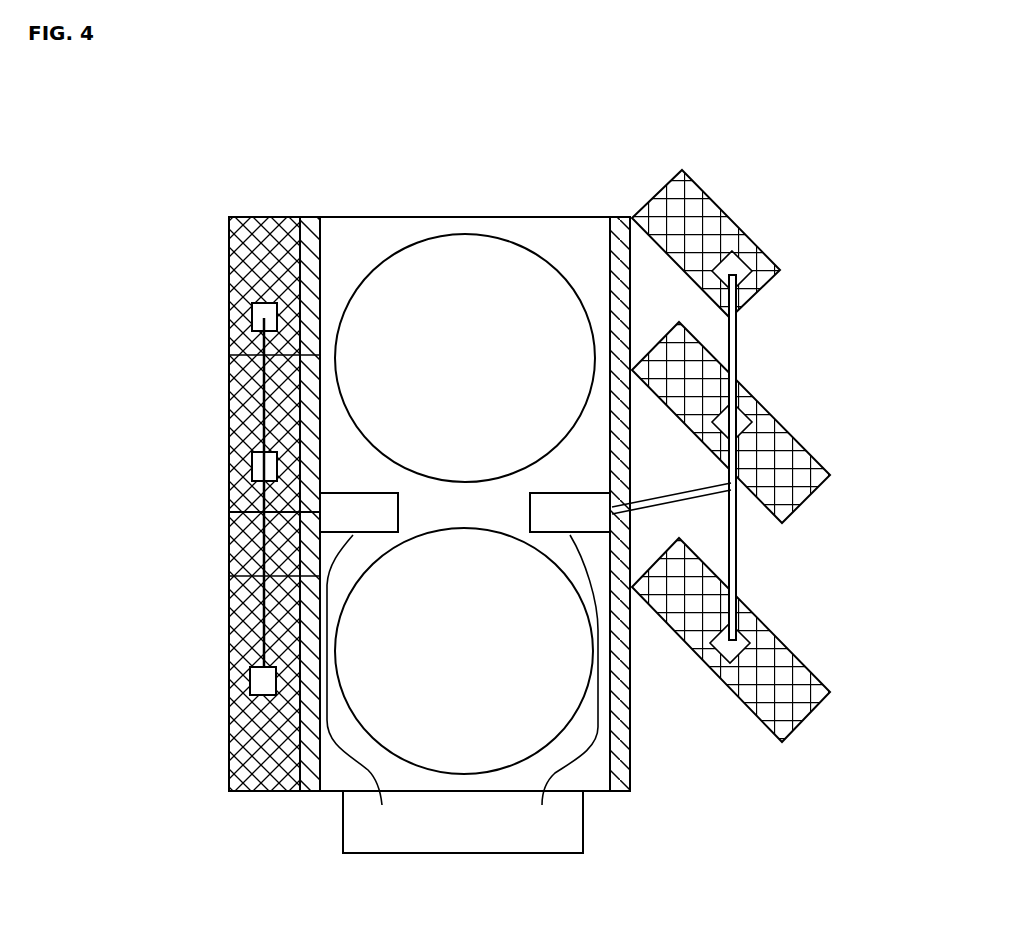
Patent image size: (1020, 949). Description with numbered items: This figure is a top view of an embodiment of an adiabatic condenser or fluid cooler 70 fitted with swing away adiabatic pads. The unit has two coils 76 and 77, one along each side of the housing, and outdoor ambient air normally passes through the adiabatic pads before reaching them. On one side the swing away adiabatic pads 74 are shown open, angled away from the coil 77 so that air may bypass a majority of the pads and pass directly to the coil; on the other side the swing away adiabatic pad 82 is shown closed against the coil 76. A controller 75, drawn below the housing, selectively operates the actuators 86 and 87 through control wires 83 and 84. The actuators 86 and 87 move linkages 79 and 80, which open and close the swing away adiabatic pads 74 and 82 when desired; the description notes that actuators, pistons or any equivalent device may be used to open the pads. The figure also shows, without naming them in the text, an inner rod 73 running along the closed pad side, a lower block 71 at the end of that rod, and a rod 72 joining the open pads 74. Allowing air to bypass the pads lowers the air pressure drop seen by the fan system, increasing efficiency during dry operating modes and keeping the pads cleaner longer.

The adiabatic condenser or fluid cooler 70 is at (207, 204).
The lower mounting block 71 is at (258, 688).
The actuating rod 72 is at (740, 588).
The inner drive rod 73 is at (260, 540).
The swing away adiabatic pad 74 is at (790, 435).
The controller 75 is at (463, 822).
The coil 76 is at (308, 217).
The coil 77 is at (632, 218).
The linkage 79 is at (667, 498).
The linkage 80 is at (229, 505).
The swing away adiabatic pad 82 is at (235, 386).
The control wire 83 is at (550, 777).
The control wire 84 is at (372, 771).
The actuator 86 is at (570, 493).
The actuator 87 is at (358, 493).